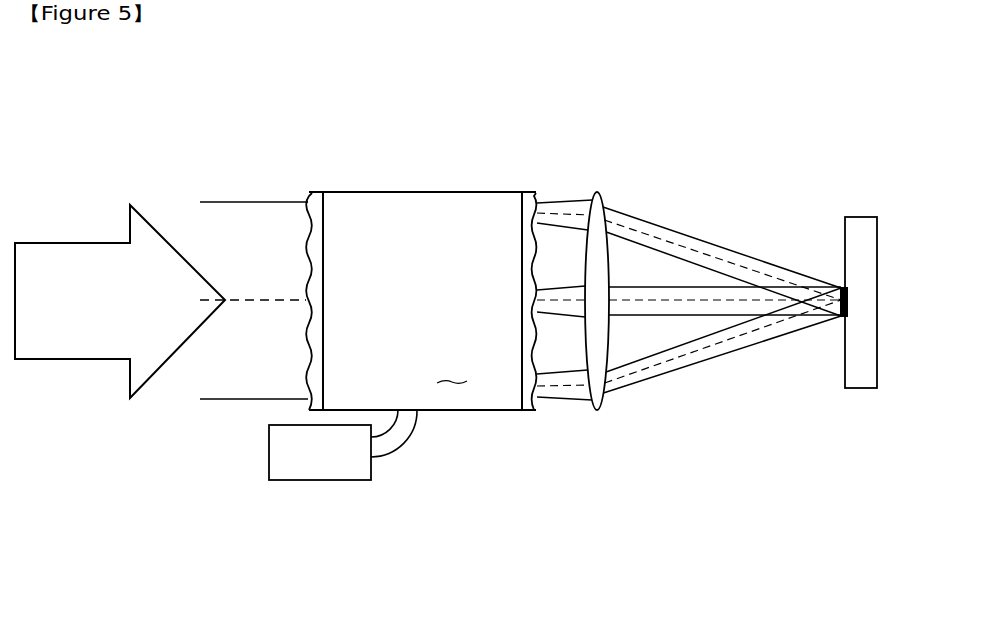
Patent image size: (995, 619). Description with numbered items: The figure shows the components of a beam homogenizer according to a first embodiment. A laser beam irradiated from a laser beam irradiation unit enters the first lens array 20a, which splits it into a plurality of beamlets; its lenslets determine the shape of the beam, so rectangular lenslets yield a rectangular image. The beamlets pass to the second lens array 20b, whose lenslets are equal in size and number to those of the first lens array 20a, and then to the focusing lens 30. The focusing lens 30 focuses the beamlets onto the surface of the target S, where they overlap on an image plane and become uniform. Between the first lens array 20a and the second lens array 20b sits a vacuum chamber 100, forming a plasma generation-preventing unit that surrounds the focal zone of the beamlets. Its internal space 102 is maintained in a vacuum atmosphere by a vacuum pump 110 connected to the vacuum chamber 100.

The first lens array 20a is at (312, 193).
The second lens array 20b is at (536, 193).
The focusing lens 30 is at (600, 193).
The target S is at (862, 222).
The vacuum chamber 100 is at (508, 411).
The internal space 102 is at (450, 384).
The vacuum pump 110 is at (315, 462).